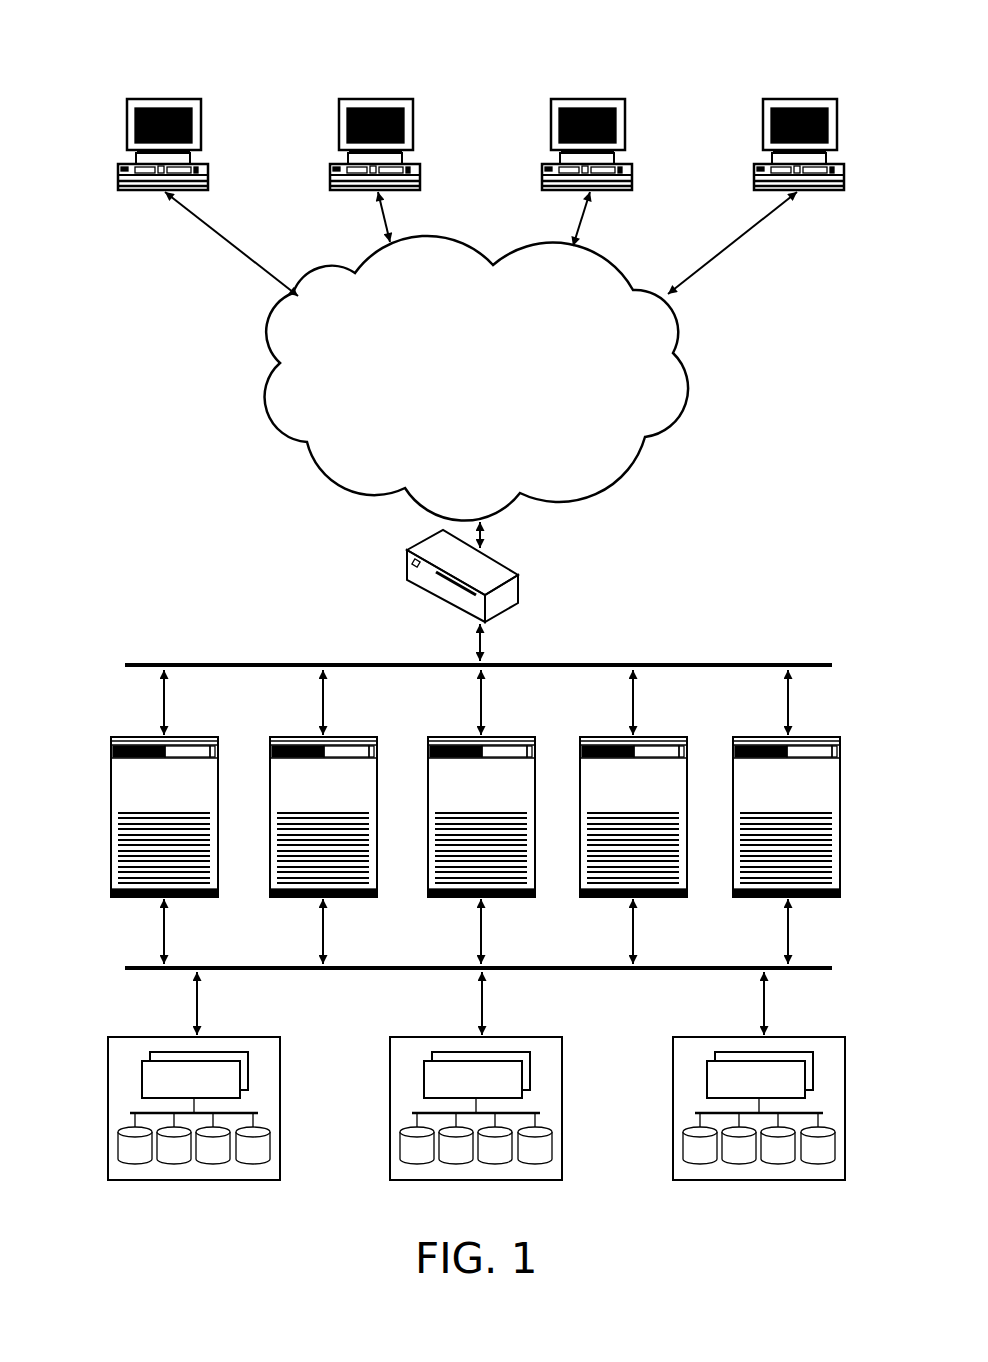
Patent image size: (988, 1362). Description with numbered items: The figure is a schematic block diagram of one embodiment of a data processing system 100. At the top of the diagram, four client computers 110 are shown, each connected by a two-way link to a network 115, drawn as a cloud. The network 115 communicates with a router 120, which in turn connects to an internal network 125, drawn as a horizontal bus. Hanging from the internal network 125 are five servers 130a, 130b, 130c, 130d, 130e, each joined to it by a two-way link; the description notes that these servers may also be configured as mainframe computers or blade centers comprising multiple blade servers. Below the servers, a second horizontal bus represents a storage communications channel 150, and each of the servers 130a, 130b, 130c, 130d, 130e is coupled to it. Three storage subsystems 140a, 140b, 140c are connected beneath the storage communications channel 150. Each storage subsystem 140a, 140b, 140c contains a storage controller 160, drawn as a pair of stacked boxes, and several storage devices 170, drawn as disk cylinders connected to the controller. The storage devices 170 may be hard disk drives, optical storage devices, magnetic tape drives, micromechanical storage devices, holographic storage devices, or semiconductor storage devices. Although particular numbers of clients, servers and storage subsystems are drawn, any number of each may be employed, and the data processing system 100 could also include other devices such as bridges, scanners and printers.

The data processing system 100 is at (124, 60).
The client computer 110 is at (200, 100).
The network 115 is at (493, 401).
The router 120 is at (518, 576).
The internal network 125 is at (148, 663).
The server 130a is at (218, 739).
The server 130b is at (377, 739).
The server 130c is at (535, 739).
The server 130d is at (687, 739).
The server 130e is at (840, 739).
The storage subsystem 140a is at (280, 1037).
The storage subsystem 140b is at (562, 1037).
The storage subsystem 140c is at (845, 1037).
The storage communications channel 150 is at (403, 972).
The storage controller 160 is at (142, 1078).
The storage device 170 is at (112, 1145).